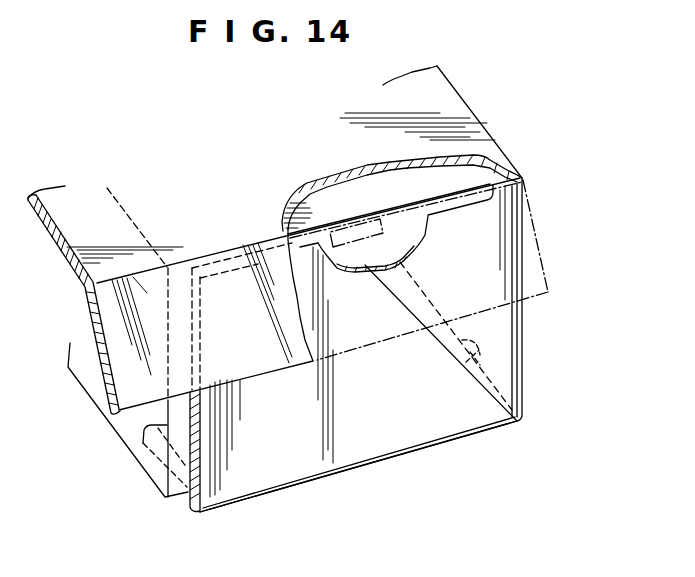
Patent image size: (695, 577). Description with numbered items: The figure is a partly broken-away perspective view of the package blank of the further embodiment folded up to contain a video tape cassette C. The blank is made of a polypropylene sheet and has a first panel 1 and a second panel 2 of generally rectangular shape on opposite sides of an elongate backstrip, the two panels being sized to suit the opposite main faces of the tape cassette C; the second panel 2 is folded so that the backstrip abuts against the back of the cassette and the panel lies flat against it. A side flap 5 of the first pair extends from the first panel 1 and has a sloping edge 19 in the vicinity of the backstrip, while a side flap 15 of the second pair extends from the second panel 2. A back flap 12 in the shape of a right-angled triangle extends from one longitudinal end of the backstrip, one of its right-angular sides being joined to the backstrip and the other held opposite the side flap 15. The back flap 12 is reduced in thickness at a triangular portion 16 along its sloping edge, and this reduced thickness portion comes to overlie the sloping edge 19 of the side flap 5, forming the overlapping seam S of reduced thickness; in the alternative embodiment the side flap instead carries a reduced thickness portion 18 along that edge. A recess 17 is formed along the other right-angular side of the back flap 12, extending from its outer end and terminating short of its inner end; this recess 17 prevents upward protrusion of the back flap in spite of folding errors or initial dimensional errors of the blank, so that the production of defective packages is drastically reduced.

The first panel 1 is at (157, 458).
The second panel 2 is at (458, 118).
The side flap 5 is at (415, 437).
The back flap 12 is at (520, 353).
The side flap 15 is at (274, 360).
The triangular portion 16 is at (407, 288).
The recess 17 is at (443, 213).
The reduced thickness portion 18 is at (378, 232).
The sloping edge 19 is at (475, 360).
The overlapping seam S is at (426, 304).
The tape cassette C is at (128, 221).